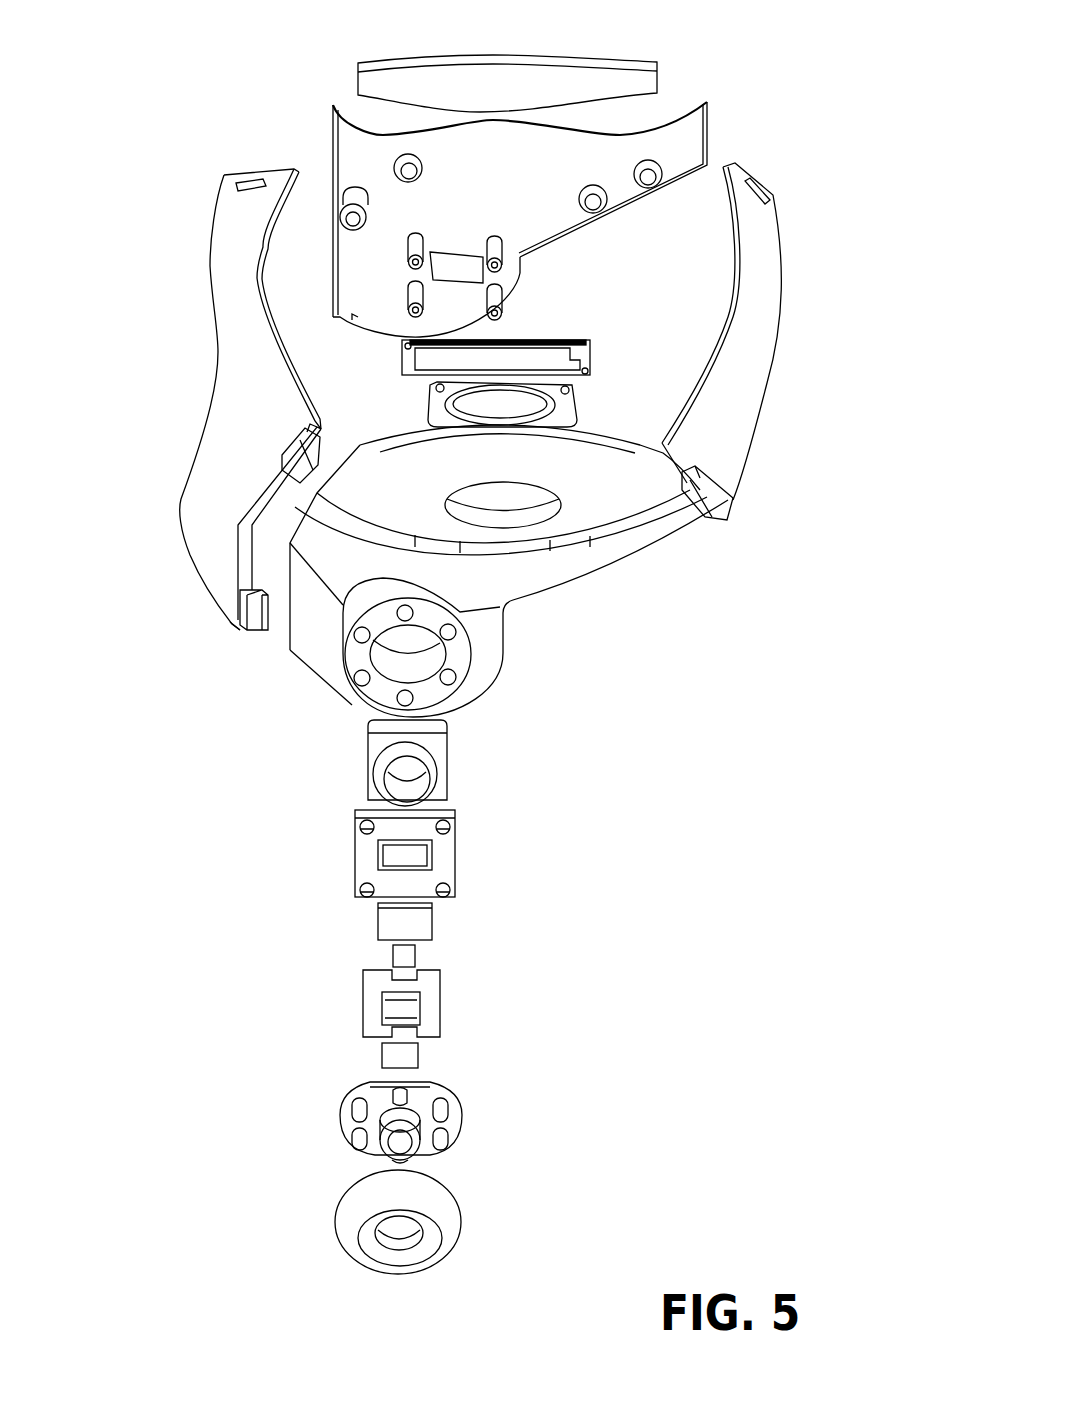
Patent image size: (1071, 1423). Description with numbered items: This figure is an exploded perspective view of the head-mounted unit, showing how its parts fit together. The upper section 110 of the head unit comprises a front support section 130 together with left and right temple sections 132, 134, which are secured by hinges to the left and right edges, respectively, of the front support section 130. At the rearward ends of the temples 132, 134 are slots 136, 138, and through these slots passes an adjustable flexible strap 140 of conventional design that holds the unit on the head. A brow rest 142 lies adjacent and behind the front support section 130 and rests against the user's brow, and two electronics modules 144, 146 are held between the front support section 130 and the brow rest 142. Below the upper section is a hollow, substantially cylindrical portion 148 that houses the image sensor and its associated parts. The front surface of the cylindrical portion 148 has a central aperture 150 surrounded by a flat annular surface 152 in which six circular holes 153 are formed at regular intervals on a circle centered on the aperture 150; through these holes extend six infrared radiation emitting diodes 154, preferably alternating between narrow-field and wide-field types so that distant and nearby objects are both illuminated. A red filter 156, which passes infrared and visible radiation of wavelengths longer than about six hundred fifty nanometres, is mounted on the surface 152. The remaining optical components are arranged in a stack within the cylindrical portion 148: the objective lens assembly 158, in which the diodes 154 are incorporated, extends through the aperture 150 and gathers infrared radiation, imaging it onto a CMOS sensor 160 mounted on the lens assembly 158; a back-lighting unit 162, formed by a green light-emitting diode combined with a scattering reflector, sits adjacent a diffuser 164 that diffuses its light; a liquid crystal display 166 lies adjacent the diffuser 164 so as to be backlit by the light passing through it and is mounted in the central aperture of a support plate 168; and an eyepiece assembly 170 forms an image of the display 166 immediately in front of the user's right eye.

The upper section 110 is at (172, 457).
The front support section 130 is at (576, 567).
The left temple section 132 is at (748, 335).
The right temple section 134 is at (232, 302).
The slot 136 is at (762, 198).
The slot 138 is at (252, 178).
The adjustable flexible strap 140 is at (460, 96).
The brow rest 142 is at (362, 160).
The electronics module 144 is at (513, 408).
The electronics module 146 is at (517, 362).
The cylindrical portion 148 is at (352, 662).
The central aperture 150 is at (400, 677).
The flat annular surface 152 is at (352, 613).
The circular holes 153 is at (393, 700).
The infrared radiation emitting diodes 154 is at (462, 1140).
The red filter 156 is at (463, 1227).
The objective lens assembly 158 is at (518, 1107).
The CMOS sensor 160 is at (419, 1058).
The back-lighting unit 162 is at (440, 1000).
The diffuser 164 is at (415, 955).
The liquid crystal display 166 is at (432, 920).
The support plate 168 is at (455, 857).
The eyepiece assembly 170 is at (447, 767).